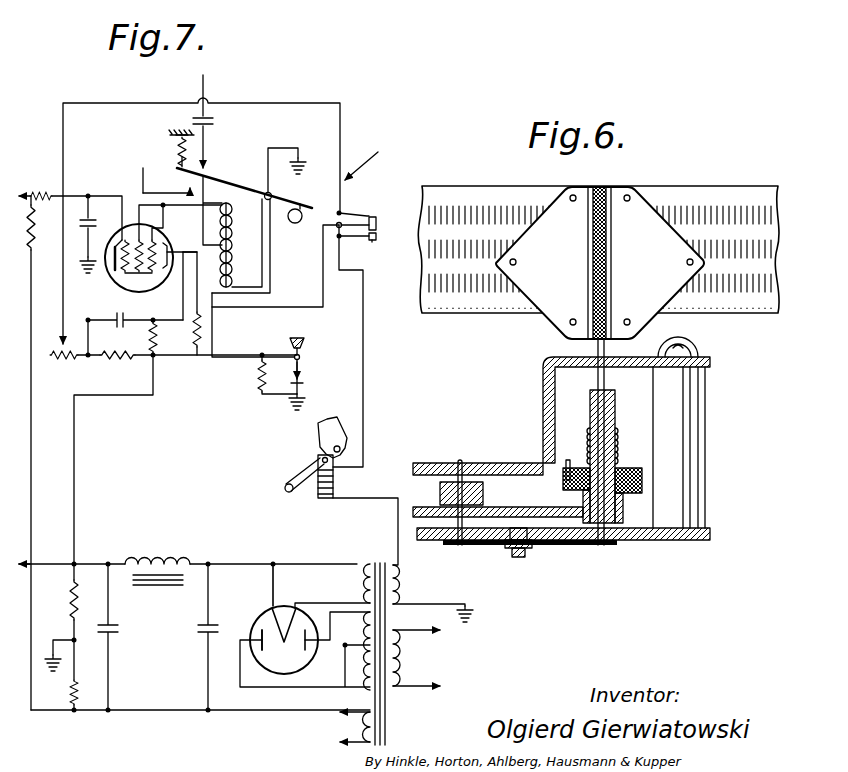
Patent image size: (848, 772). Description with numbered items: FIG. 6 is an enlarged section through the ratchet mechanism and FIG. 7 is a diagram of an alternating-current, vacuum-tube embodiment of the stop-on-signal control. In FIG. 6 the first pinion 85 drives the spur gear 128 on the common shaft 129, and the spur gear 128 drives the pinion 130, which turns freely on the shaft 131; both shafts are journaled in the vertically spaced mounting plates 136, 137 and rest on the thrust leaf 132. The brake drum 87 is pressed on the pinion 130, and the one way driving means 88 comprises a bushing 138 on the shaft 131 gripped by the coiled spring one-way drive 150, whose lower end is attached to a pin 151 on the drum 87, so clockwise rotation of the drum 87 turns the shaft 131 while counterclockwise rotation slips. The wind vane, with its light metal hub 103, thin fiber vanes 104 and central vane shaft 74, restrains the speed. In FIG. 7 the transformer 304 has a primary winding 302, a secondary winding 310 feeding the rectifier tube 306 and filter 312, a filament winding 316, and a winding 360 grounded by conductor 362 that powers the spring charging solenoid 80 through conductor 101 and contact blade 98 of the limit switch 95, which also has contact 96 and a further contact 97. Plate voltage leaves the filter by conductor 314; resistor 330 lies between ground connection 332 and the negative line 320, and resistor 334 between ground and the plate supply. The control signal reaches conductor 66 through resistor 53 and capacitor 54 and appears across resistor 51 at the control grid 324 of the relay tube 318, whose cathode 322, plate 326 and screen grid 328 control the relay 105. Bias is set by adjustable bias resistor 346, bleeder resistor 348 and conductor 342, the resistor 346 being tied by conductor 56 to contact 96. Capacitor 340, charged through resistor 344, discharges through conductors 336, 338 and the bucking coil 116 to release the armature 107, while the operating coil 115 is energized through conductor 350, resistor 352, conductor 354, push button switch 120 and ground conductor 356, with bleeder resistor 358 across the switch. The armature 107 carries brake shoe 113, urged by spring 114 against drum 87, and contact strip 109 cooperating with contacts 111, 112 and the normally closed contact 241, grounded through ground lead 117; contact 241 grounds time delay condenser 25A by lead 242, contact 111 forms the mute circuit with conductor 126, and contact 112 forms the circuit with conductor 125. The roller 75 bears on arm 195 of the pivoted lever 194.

In FIG. 7, the conductor 56 is at (117, 98).
In FIG. 7, the time delay condenser 25A is at (216, 120).
In FIG. 7, the armature 107 is at (217, 184).
In FIG. 7, the contact strip 109 is at (213, 174).
In FIG. 7, the brake shoe 113 is at (286, 182).
In FIG. 7, the spring 114 is at (178, 138).
In FIG. 7, the lead 242 is at (209, 138).
In FIG. 7, the normally closed contact 241 is at (205, 154).
In FIG. 7, the mute circuit conductor 126 is at (143, 173).
In FIG. 7, the normally open contact 111 is at (187, 185).
In FIG. 7, the ground lead 117 is at (287, 143).
In FIG. 7, the brake drum 87 is at (294, 224).
In FIG. 6, the brake drum 87 is at (643, 480).
In FIG. 7, the stop-on-signal relay 105 is at (375, 155).
In FIG. 7, the contact 96 is at (356, 212).
In FIG. 7, the limit switch 95 is at (402, 220).
In FIG. 7, the fixed contact 97 is at (377, 235).
In FIG. 7, the contact blade 98 is at (372, 242).
In FIG. 7, the conductor 101 is at (363, 356).
In FIG. 7, the normally open contact 112 is at (233, 204).
In FIG. 7, the bucking coil 116 is at (233, 222).
In FIG. 7, the operating coil 115 is at (232, 266).
In FIG. 7, the conductor 125 is at (294, 307).
In FIG. 7, the current limiting resistor 352 is at (201, 327).
In FIG. 7, the conductor 354 is at (235, 357).
In FIG. 7, the bleeder resistor 358 is at (260, 384).
In FIG. 7, the push button switch 120 is at (302, 348).
In FIG. 7, the ground conductor 356 is at (302, 384).
In FIG. 7, the pivoted lever 194 is at (347, 429).
In FIG. 7, the arm 195 is at (296, 472).
In FIG. 7, the roller 75 is at (287, 492).
In FIG. 7, the spring charging solenoid 80 is at (338, 485).
In FIG. 7, the conductor 66 is at (21, 191).
In FIG. 7, the resistor 53 is at (42, 194).
In FIG. 7, the capacitor 54 is at (92, 195).
In FIG. 7, the resistor 51 is at (34, 235).
In FIG. 7, the control grid 324 is at (99, 234).
In FIG. 7, the conductor 342 is at (76, 464).
In FIG. 7, the stop-on-signal relay tube 318 is at (108, 272).
In FIG. 7, the cathode 322 is at (123, 275).
In FIG. 7, the screen grid 328 is at (144, 233).
In FIG. 7, the conductor 336 is at (172, 227).
In FIG. 7, the conductor 338 is at (175, 246).
In FIG. 7, the plate 326 is at (184, 286).
In FIG. 7, the capacitor 340 is at (126, 326).
In FIG. 7, the current limiting and time delay resistor 344 is at (158, 350).
In FIG. 7, the adjustable bias resistor 346 is at (60, 370).
In FIG. 7, the bleeder resistor 348 is at (114, 370).
In FIG. 7, the conductor 350 is at (198, 362).
In FIG. 7, the resistor 334 is at (92, 562).
In FIG. 7, the filter 312 is at (172, 637).
In FIG. 7, the conductor 314 is at (24, 568).
In FIG. 7, the ground connection 332 is at (54, 640).
In FIG. 7, the resistor 330 is at (76, 712).
In FIG. 7, the negative line 320 is at (124, 712).
In FIG. 7, the secondary winding 310 is at (304, 653).
In FIG. 7, the rectifier tube 306 is at (283, 668).
In FIG. 7, the transformer 304 is at (394, 654).
In FIG. 7, the secondary winding 316 is at (342, 735).
In FIG. 7, the secondary winding 360 is at (403, 590).
In FIG. 7, the conductor 362 is at (456, 604).
In FIG. 7, the primary winding 302 is at (409, 654).
In FIG. 6, the fiber vanes 104 is at (708, 220).
In FIG. 6, the hub 103 is at (618, 245).
In FIG. 6, the shaft 74 is at (600, 186).
In FIG. 6, the mounting plate 137 is at (543, 378).
In FIG. 6, the one way driving means 88 is at (620, 445).
In FIG. 6, the mounting plate 136 is at (683, 542).
In FIG. 6, the shaft 129 is at (442, 542).
In FIG. 6, the spur gear 128 is at (490, 508).
In FIG. 6, the first pinion 85 is at (440, 488).
In FIG. 6, the bushing 138 is at (616, 402).
In FIG. 6, the coiled spring one-way drive 150 is at (624, 446).
In FIG. 6, the pin 151 is at (568, 462).
In FIG. 6, the shaft 131 is at (625, 500).
In FIG. 6, the pinion 130 is at (623, 514).
In FIG. 6, the thrust leaf 132 is at (547, 556).